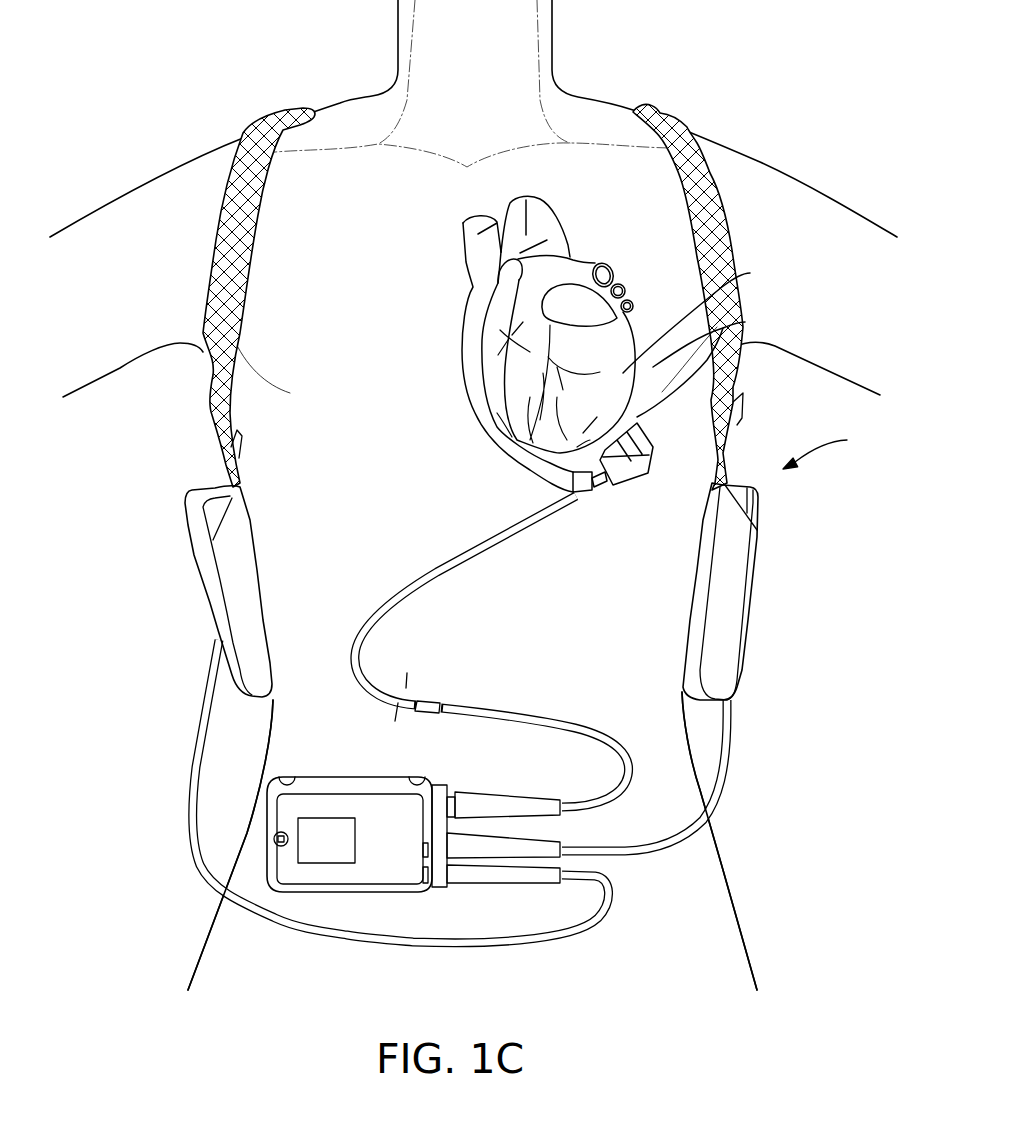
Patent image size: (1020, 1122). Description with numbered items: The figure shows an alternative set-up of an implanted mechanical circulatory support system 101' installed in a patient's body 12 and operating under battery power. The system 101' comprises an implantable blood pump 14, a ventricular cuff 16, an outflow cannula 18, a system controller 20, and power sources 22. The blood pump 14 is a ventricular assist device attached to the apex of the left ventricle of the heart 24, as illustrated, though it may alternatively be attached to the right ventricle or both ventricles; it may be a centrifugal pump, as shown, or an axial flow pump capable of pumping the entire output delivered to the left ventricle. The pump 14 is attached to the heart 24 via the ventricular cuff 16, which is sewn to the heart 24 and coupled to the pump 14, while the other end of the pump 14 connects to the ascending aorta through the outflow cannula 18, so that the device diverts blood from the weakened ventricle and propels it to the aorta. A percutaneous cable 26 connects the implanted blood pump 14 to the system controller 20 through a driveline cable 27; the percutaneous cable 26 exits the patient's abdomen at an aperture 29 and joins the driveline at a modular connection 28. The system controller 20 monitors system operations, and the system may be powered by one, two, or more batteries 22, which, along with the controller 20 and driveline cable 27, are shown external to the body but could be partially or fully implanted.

The patient's body 12 is at (120, 370).
The implantable blood pump 14 is at (722, 388).
The ventricular cuff 16 is at (745, 322).
The outflow cannula 18 is at (477, 417).
The system controller 20 is at (265, 830).
The power sources 22 is at (213, 612).
The heart 24 is at (750, 273).
The percutaneous cable 26 is at (437, 570).
The driveline cable 27 is at (623, 752).
The modular connection 28 is at (431, 711).
The aperture 29 is at (408, 683).
The implanted mechanical circulatory support system 101' is at (843, 447).